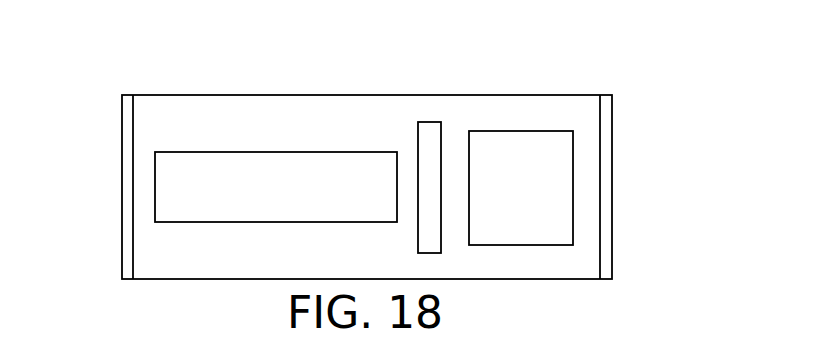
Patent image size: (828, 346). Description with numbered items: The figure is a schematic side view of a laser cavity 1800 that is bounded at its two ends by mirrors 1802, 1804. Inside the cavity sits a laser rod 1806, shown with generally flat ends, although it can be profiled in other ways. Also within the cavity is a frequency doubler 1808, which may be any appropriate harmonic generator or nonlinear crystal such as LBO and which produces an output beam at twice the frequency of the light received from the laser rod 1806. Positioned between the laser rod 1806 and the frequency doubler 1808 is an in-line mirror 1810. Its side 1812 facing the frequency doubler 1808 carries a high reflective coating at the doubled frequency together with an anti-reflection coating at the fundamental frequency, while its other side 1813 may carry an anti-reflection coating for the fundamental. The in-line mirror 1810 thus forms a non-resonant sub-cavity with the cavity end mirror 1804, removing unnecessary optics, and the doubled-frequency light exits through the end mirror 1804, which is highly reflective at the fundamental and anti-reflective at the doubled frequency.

The laser cavity 1800 is at (177, 94).
The mirror 1802 is at (122, 190).
The cavity end mirror 1804 is at (612, 190).
The laser rod 1806 is at (277, 152).
The frequency doubler 1808 is at (522, 131).
The in-line mirror 1810 is at (432, 122).
The side of the in-line mirror adjacent the frequency doubling element 1812 is at (441, 243).
The other side of the in-line mirror 1813 is at (418, 243).